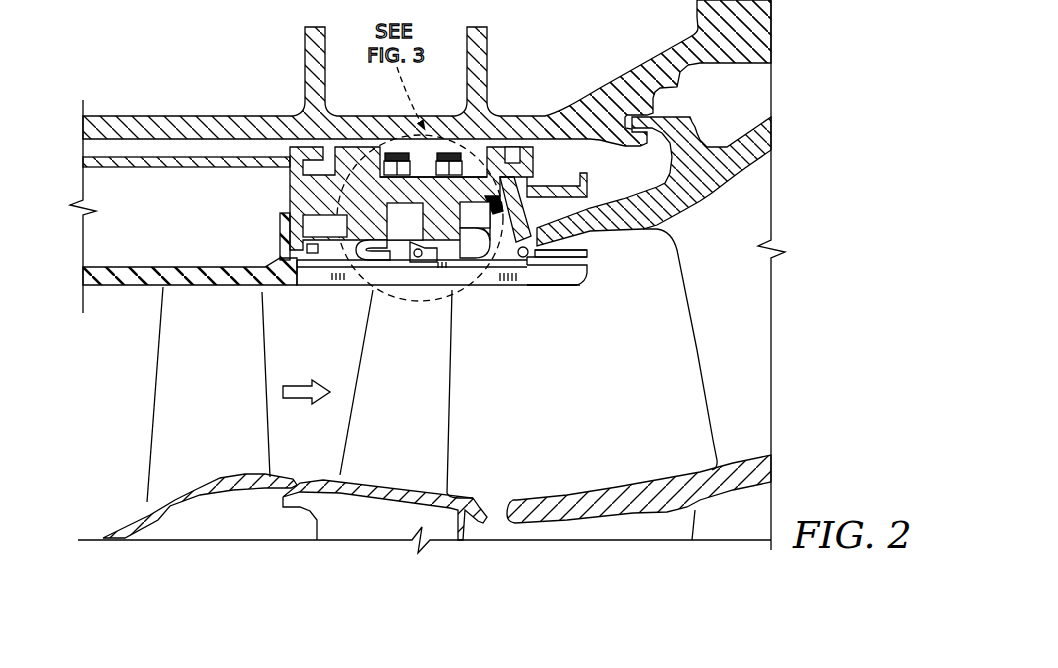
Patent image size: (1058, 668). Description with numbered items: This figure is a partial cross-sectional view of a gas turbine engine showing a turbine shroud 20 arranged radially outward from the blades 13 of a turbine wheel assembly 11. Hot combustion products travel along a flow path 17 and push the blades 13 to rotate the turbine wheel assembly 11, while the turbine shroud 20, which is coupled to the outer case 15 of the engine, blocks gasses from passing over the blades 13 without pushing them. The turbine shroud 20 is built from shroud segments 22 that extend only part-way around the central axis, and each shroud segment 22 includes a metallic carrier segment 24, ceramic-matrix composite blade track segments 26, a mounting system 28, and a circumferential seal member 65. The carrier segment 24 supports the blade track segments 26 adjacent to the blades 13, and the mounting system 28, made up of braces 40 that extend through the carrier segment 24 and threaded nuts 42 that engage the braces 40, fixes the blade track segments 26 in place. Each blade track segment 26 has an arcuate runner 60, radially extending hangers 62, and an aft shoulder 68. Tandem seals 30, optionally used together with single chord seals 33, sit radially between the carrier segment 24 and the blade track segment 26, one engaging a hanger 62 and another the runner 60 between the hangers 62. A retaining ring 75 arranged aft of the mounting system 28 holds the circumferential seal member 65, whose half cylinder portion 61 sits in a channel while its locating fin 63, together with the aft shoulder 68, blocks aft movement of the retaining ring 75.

The turbine wheel assembly 11 is at (459, 447).
The blades 13 is at (426, 389).
The outer case 15 is at (165, 112).
The flow path 17 is at (292, 402).
The turbine shroud 20 is at (600, 144).
The shroud segments 22 is at (555, 168).
The carrier segment 24 is at (288, 176).
The blade track segments 26 is at (311, 289).
The mounting system 28 is at (473, 167).
The tandem seals 30 is at (349, 227).
The single chord seals 33 is at (497, 212).
The braces 40 is at (381, 243).
The threaded nuts 42 is at (372, 165).
The runner 60 is at (600, 278).
The half cylinder portion 61 is at (536, 270).
The hangers 62 is at (521, 240).
The locating fins 63 is at (545, 257).
The circumferential seal member 65 is at (547, 290).
The aft shoulder 68 is at (600, 252).
The retaining ring 75 is at (523, 260).